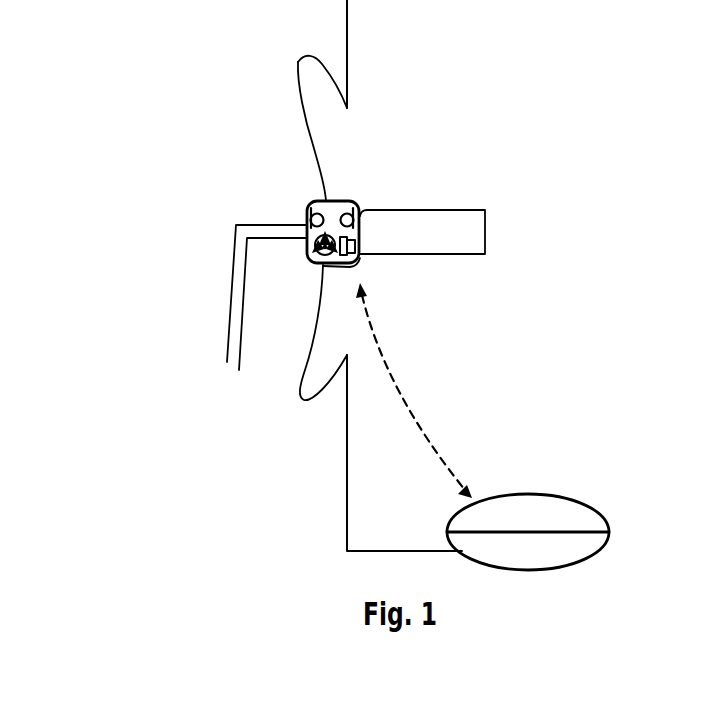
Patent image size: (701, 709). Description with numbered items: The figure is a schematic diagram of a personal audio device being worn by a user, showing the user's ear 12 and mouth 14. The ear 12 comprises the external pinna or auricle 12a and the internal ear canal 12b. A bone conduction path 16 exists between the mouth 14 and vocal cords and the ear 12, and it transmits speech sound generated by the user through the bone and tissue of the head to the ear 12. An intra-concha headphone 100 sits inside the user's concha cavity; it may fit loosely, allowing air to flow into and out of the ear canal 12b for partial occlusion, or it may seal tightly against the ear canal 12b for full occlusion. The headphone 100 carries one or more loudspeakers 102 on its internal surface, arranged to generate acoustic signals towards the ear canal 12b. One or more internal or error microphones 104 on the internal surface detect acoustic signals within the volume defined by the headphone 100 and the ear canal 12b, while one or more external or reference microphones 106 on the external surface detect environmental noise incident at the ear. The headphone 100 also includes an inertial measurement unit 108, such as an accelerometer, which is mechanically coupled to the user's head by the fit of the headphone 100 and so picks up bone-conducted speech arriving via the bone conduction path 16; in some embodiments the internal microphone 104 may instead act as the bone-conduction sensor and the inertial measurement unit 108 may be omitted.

The intra-concha headphone 100 is at (158, 220).
The ear 12 is at (293, 119).
The pinna 12a is at (301, 82).
The ear canal 12b is at (453, 245).
The loudspeaker 102 is at (360, 256).
The internal microphone 104 is at (353, 210).
The external microphone 106 is at (311, 210).
The inertial measurement unit 108 is at (318, 263).
The bone conduction path 16 is at (414, 390).
The mouth 14 is at (549, 495).